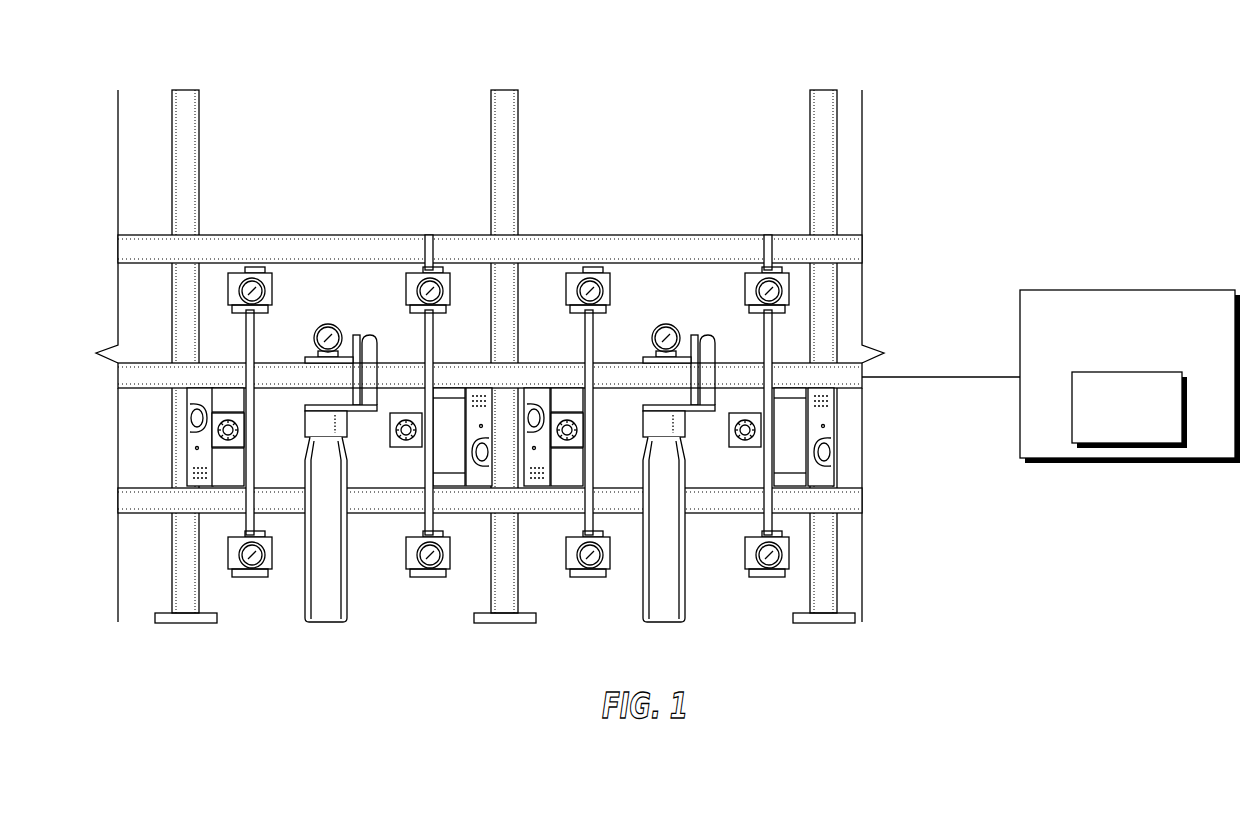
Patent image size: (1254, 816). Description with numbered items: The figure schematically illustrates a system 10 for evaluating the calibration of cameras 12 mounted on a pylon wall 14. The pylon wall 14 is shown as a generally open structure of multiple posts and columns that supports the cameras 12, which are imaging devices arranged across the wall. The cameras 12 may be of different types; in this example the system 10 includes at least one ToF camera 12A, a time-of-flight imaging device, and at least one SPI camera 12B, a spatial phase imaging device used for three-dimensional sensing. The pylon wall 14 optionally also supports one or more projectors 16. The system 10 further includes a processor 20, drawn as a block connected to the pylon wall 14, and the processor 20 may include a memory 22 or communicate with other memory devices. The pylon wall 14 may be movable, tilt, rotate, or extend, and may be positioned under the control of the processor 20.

The system 10 is at (1086, 112).
The cameras 12 is at (406, 291).
The ToF camera 12A is at (390, 428).
The SPI camera 12B is at (660, 325).
The pylon wall 14 is at (316, 180).
The projector 16 is at (186, 452).
The processor 20 is at (1115, 355).
The memory 22 is at (1114, 434).